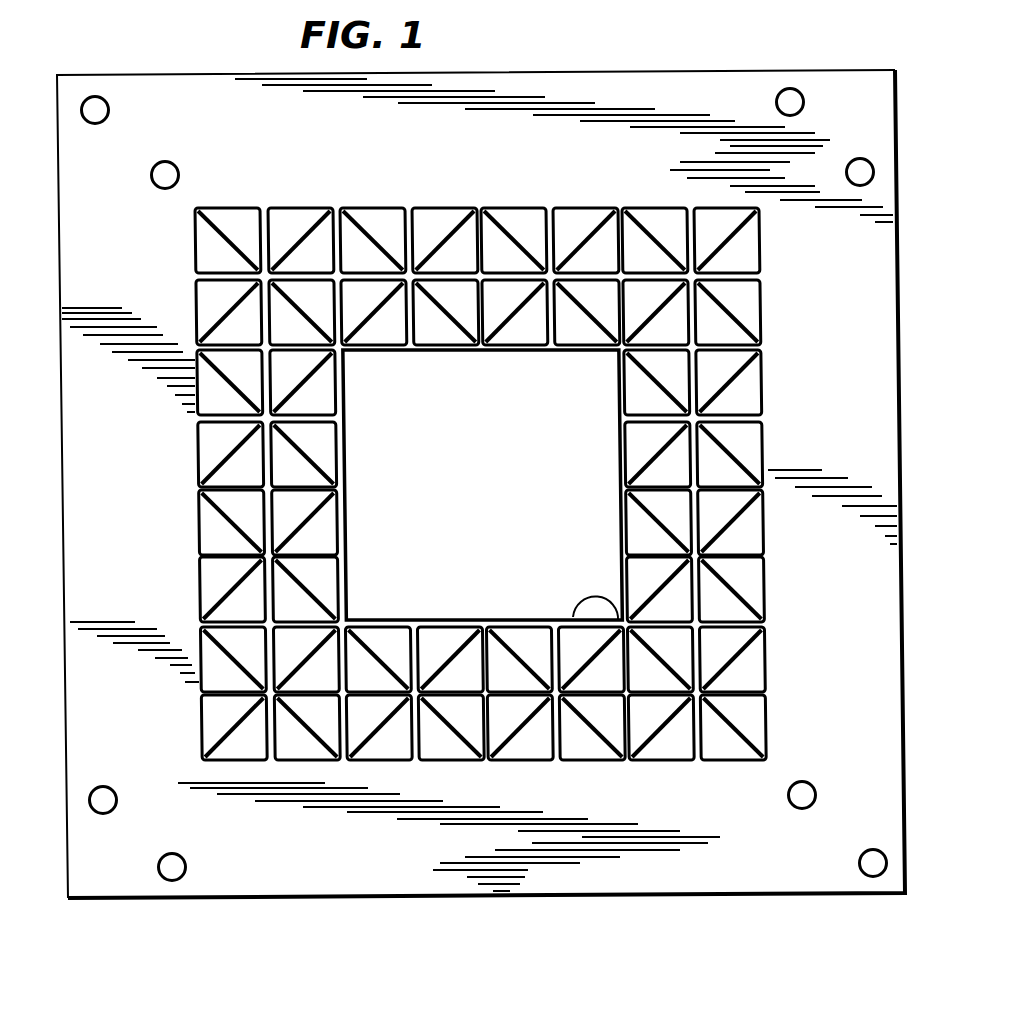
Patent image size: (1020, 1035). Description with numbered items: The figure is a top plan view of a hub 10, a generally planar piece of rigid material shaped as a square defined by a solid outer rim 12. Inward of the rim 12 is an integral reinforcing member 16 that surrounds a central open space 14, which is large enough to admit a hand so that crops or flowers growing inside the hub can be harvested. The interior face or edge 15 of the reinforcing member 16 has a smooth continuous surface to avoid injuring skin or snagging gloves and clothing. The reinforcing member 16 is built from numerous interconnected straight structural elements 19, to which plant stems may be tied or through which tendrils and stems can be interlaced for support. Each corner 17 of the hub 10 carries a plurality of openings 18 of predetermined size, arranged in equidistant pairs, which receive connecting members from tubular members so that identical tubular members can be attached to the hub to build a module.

The hub 10 is at (60, 529).
The outer rim 12 is at (442, 872).
The central open space 14 is at (450, 575).
The interior face or edge 15 is at (619, 623).
The reinforcing member 16 is at (531, 484).
The corner 17 is at (71, 137).
The openings 18 is at (163, 163).
The structural elements 19 is at (737, 313).